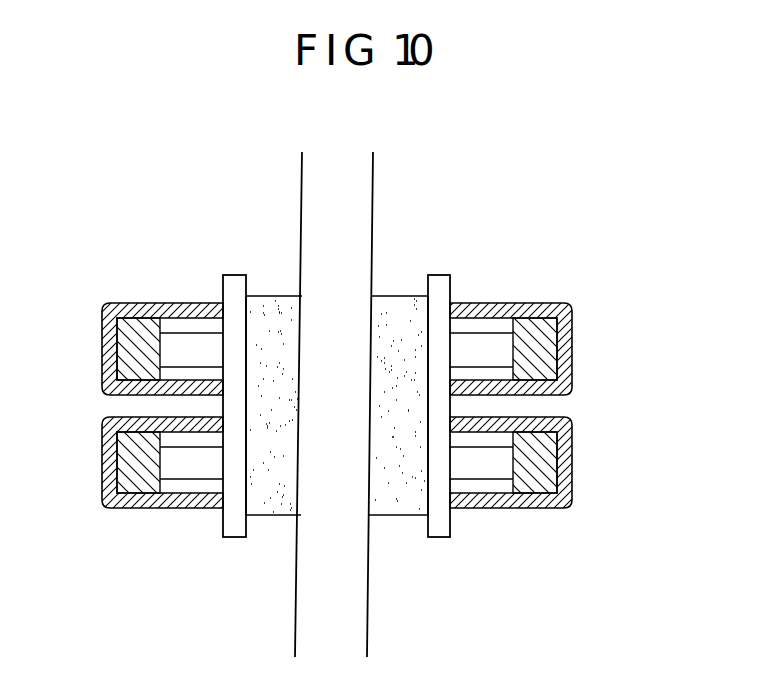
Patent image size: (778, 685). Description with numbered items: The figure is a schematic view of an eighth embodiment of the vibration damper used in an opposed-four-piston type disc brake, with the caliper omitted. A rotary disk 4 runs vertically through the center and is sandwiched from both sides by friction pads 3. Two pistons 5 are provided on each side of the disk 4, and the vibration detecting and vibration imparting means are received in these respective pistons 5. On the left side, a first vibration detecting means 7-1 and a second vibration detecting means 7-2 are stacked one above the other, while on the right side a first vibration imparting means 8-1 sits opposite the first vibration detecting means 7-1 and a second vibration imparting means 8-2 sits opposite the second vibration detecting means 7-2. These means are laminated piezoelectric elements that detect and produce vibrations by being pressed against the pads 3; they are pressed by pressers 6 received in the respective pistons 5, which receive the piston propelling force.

The friction pad 3 is at (228, 538).
The rotary disk 4 is at (320, 583).
The piston 5 is at (537, 507).
The presser 6 is at (542, 467).
The first vibration detecting means 7-1 is at (178, 340).
The second vibration detecting means 7-2 is at (182, 470).
The first vibration imparting means 8-1 is at (500, 335).
The second vibration imparting means 8-2 is at (552, 493).